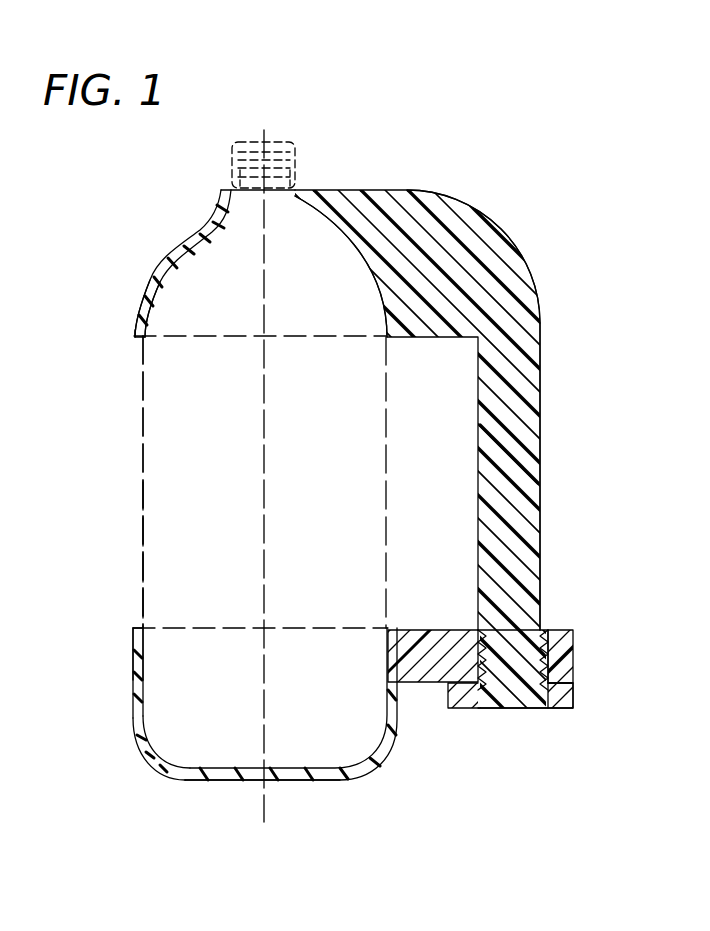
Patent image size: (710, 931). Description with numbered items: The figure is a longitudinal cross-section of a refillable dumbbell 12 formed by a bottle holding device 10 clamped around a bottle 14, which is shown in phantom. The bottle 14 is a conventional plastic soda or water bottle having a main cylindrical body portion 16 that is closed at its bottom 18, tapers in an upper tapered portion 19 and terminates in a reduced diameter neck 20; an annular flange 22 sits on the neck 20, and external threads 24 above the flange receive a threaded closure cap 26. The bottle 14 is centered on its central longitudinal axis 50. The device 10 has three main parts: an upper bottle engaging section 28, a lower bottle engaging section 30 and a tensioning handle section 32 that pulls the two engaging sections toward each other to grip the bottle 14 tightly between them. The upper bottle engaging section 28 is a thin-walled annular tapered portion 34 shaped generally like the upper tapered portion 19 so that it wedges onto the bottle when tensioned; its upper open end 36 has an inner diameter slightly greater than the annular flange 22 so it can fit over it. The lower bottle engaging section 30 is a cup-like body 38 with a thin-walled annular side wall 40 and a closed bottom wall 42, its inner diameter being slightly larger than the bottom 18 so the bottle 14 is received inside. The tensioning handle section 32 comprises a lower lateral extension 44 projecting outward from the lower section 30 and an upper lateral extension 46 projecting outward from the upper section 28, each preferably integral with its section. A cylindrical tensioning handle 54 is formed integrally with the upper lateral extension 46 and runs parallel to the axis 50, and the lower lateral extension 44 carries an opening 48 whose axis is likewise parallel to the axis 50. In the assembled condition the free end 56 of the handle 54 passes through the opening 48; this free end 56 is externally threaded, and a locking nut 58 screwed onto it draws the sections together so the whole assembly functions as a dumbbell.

The bottle holding device 10 is at (492, 180).
The refillable dumbbell 12 is at (79, 193).
The bottle 14 is at (140, 463).
The main cylindrical body portion 16 is at (143, 540).
The bottom 18 is at (216, 768).
The upper tapered portion 19 is at (185, 248).
The reduced diameter neck 20 is at (240, 176).
The annular flange 22 is at (221, 190).
The external threads 24 is at (235, 150).
The threaded closure cap 26 is at (260, 140).
The upper bottle engaging section 28 is at (131, 324).
The lower bottle engaging section 30 is at (129, 686).
The tensioning handle section 32 is at (546, 378).
The annular tapered portion 34 is at (138, 292).
The upper open end 36 is at (292, 197).
The cup-like body 38 is at (129, 650).
The annular side wall 40 is at (133, 728).
The closed bottom wall 42 is at (305, 782).
The lower lateral extension 44 is at (575, 655).
The upper lateral extension 46 is at (447, 185).
The opening 48 is at (532, 640).
The central longitudinal axis 50 is at (264, 477).
The cylindrical tensioning handle 54 is at (527, 437).
The free end 56 is at (512, 710).
The locking nut 58 is at (567, 712).